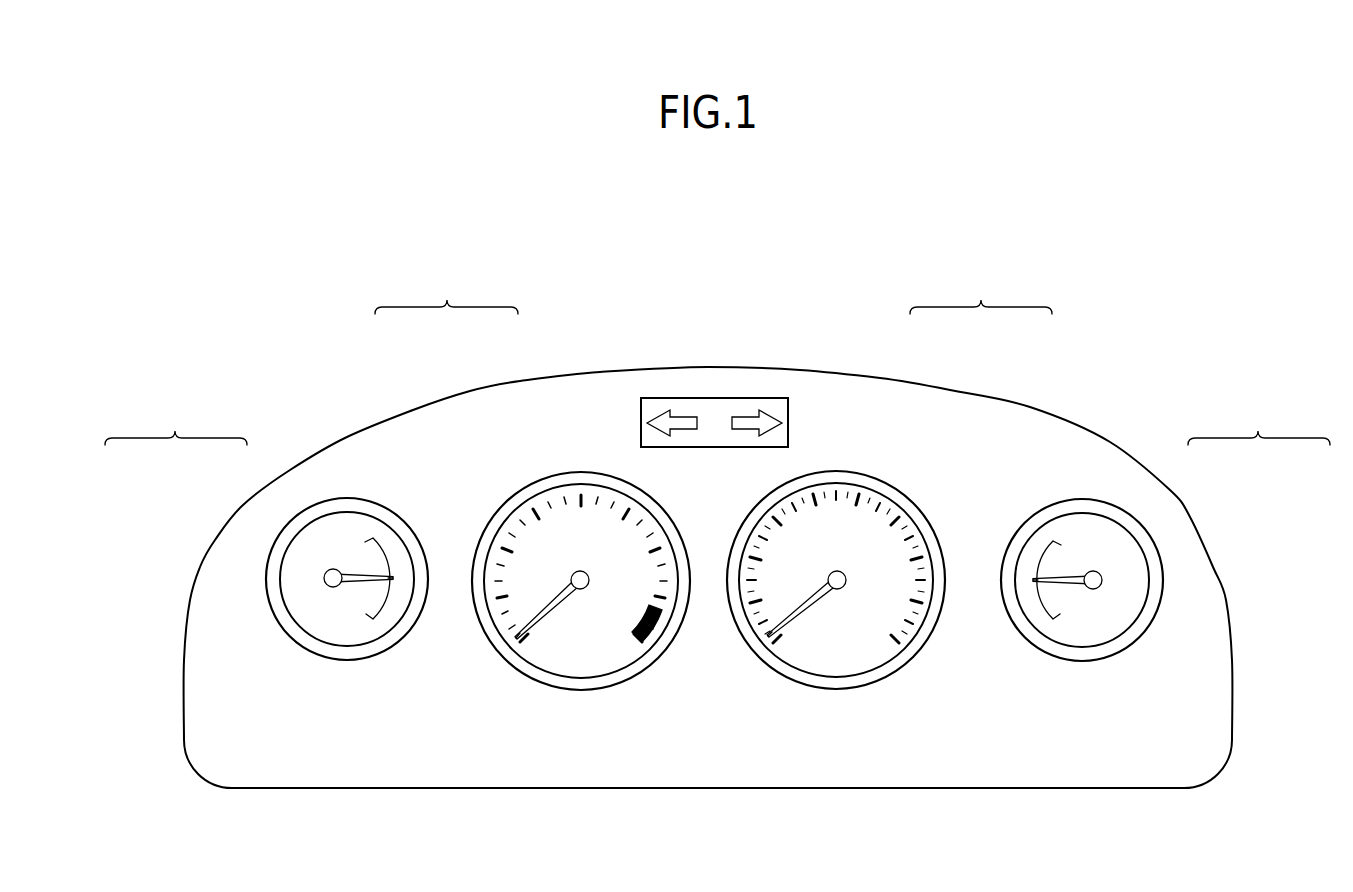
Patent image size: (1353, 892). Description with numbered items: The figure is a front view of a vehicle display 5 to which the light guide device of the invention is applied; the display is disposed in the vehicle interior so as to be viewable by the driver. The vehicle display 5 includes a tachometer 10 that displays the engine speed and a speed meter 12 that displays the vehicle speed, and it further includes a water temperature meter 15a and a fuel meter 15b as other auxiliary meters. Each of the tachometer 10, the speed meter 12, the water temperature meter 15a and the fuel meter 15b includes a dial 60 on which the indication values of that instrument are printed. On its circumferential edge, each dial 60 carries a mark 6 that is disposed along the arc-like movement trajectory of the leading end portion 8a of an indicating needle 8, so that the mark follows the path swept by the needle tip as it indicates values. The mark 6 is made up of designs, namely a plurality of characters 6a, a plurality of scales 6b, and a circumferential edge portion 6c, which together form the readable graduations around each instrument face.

The vehicle display 5 is at (1095, 337).
The mark 6 is at (167, 417).
The characters 6a is at (275, 612).
The scales 6b is at (355, 538).
The circumferential edge portion 6c is at (300, 590).
The indicating needle 8 is at (363, 584).
The leading end portion 8a is at (392, 584).
The tachometer 10 is at (580, 470).
The speed meter 12 is at (847, 471).
The water temperature meter 15a is at (1104, 496).
The fuel meter 15b is at (345, 491).
The dial 60 is at (333, 634).